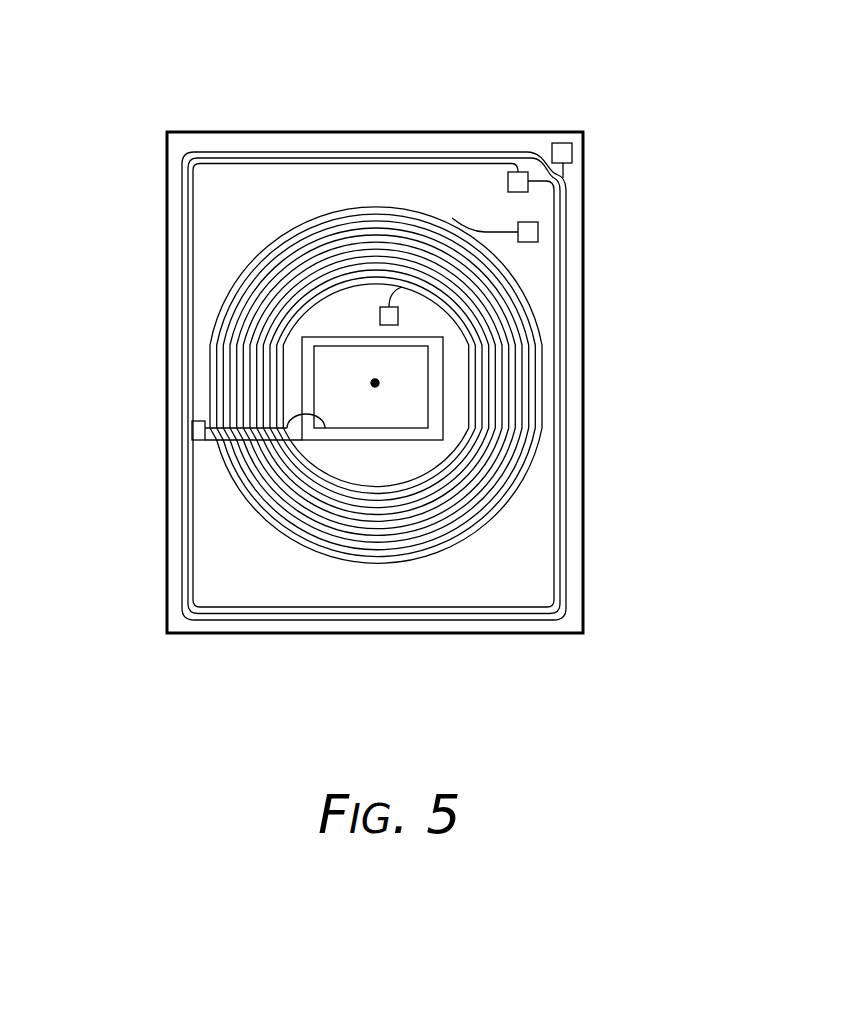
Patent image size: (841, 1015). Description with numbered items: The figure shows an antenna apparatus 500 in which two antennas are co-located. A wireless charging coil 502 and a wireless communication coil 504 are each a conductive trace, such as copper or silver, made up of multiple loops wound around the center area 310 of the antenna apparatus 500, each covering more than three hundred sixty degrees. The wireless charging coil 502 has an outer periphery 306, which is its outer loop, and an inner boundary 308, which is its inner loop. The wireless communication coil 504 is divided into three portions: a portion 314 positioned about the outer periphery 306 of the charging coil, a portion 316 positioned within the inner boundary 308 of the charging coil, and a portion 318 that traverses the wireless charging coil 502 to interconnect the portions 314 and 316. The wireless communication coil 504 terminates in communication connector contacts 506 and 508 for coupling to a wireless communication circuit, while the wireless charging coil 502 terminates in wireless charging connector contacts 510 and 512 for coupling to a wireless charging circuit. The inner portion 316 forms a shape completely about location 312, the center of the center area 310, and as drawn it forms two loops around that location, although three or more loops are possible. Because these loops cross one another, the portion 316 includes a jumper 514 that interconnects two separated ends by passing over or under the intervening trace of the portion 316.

The antenna apparatus 500 is at (585, 378).
The wireless charging coil 502 is at (343, 198).
The wireless communication coil 504 is at (212, 145).
The communication connector contact 506 is at (562, 142).
The communication connector contact 508 is at (528, 181).
The wireless charging connector contact 510 is at (538, 232).
The wireless charging connector contact 512 is at (398, 316).
The center area 310 is at (368, 300).
The portion of the wireless communication coil 316 is at (337, 330).
The location 312 is at (378, 385).
The inner boundary 308 is at (452, 455).
The outer periphery 306 is at (237, 275).
The portion of the wireless communication coil 314 is at (222, 603).
The portion of the wireless communication coil 318 is at (200, 420).
The jumper 514 is at (300, 420).